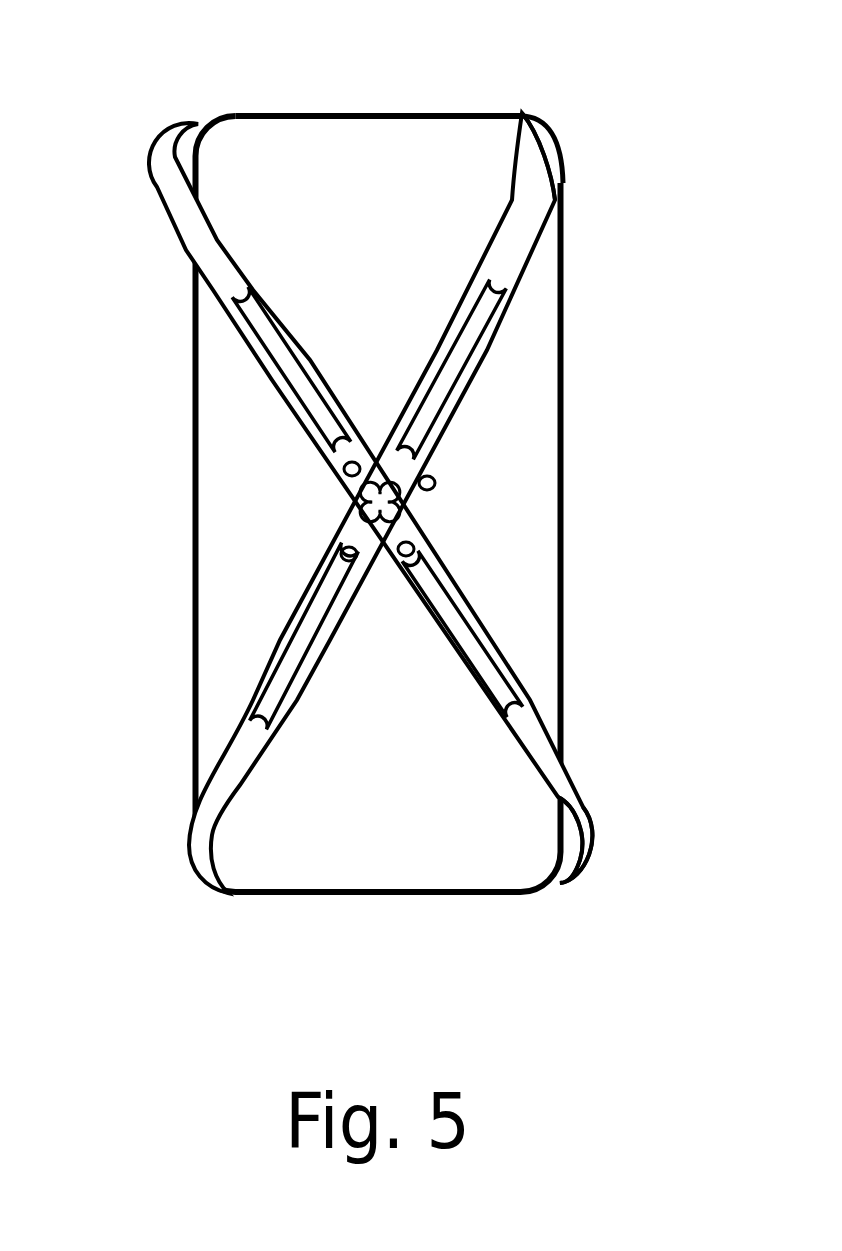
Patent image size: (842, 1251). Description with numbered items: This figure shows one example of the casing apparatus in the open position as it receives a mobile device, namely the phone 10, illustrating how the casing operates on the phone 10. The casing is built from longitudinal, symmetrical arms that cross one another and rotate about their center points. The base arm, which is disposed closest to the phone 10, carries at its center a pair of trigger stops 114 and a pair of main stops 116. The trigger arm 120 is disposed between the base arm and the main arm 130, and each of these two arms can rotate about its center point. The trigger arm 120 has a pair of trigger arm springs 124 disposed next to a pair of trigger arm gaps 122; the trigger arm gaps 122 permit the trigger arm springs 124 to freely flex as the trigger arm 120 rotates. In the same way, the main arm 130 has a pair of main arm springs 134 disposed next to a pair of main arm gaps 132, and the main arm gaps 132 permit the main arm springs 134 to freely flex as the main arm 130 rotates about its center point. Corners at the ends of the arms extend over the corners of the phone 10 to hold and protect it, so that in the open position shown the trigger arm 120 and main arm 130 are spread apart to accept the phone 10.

The phone 10 is at (389, 140).
The trigger stops 114 is at (345, 464).
The main stops 116 is at (420, 472).
The trigger arm 120 is at (590, 815).
The trigger arm gaps 122 is at (478, 653).
The trigger arm springs 124 is at (323, 398).
The main arm 130 is at (550, 178).
The main arm gaps 132 is at (490, 302).
The main arm springs 134 is at (495, 326).